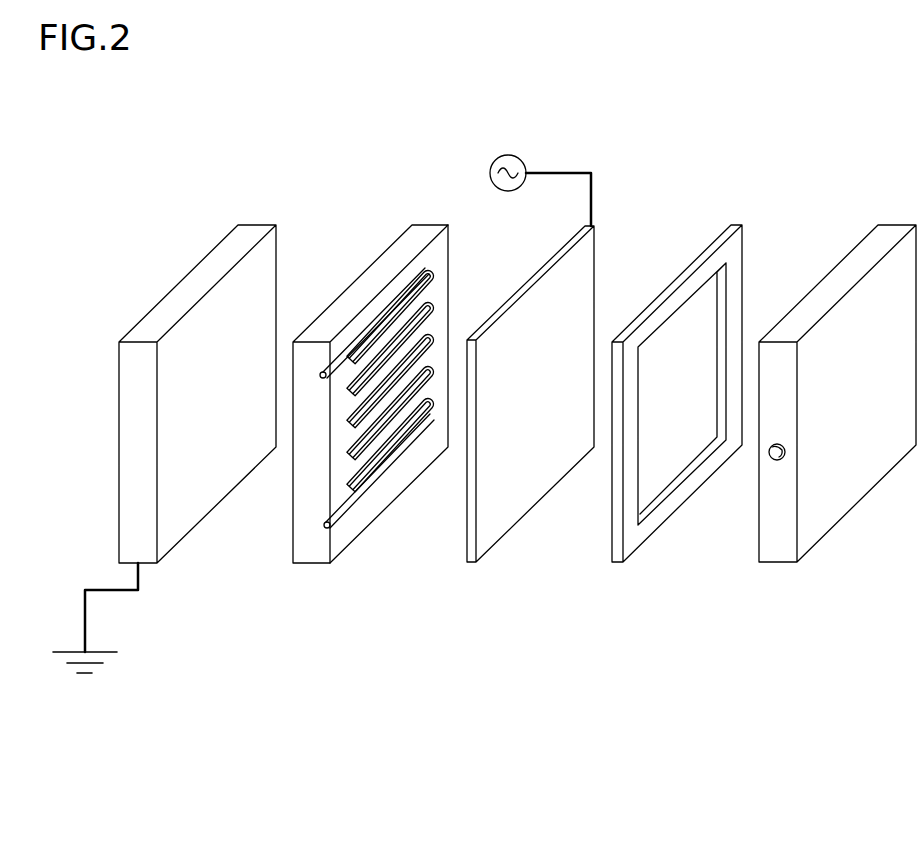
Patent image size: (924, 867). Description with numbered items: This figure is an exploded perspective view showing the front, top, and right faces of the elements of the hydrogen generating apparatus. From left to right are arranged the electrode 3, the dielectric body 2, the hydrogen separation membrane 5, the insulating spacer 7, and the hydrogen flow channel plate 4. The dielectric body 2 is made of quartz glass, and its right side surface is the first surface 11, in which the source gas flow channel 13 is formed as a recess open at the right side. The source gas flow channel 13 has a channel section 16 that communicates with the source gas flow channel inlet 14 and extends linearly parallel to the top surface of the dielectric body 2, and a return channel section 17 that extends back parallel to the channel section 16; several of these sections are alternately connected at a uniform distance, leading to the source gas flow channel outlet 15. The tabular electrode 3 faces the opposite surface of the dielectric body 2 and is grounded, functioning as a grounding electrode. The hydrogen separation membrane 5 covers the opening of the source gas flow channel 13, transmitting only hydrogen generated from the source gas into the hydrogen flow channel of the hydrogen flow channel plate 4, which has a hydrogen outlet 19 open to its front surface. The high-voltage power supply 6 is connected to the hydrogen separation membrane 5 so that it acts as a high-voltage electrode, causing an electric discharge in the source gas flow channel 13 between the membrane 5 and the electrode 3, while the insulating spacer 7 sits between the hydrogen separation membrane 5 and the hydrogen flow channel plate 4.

The dielectric body 2 is at (371, 403).
The electrode 3 is at (186, 285).
The hydrogen flow channel plate 4 is at (837, 393).
The hydrogen separation membrane 5 is at (507, 515).
The high-voltage power supply 6 is at (512, 157).
The insulating spacer 7 is at (677, 285).
The first surface 11 is at (448, 260).
The source gas flow channel 13 is at (380, 477).
The source gas flow channel inlet 14 is at (322, 378).
The source gas flow channel outlet 15 is at (326, 528).
The channel section 16 is at (386, 318).
The return channel section 17 is at (420, 318).
The hydrogen outlet 19 is at (775, 461).